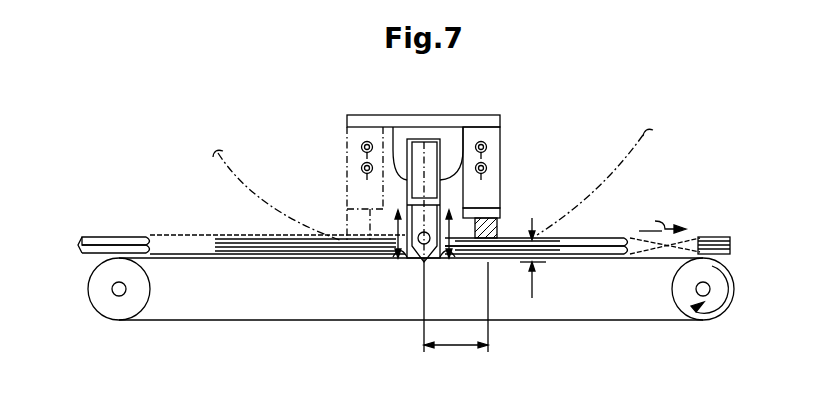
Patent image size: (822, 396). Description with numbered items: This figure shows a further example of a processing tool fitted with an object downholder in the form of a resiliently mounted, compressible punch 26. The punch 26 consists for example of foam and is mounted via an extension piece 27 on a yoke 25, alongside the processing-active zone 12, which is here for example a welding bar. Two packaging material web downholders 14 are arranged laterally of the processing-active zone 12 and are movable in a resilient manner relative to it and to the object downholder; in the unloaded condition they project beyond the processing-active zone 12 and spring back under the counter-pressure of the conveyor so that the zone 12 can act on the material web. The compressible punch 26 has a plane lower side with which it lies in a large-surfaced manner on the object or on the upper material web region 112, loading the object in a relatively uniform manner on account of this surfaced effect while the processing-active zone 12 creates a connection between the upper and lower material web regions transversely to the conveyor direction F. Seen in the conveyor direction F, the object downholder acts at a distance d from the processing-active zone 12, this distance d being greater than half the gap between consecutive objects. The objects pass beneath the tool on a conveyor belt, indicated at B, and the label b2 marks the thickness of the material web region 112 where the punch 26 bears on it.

The yoke 25 is at (408, 128).
The extension piece 27 is at (496, 171).
The compressible punch 26 is at (500, 226).
The processing-active zone 12 is at (420, 265).
The packaging material web downholder 14 is at (394, 263).
The upper material web region 112 is at (597, 240).
The conveyor belt B is at (406, 275).
The conveyor direction F is at (662, 222).
The distance d is at (456, 307).
The thickness b2 is at (538, 262).